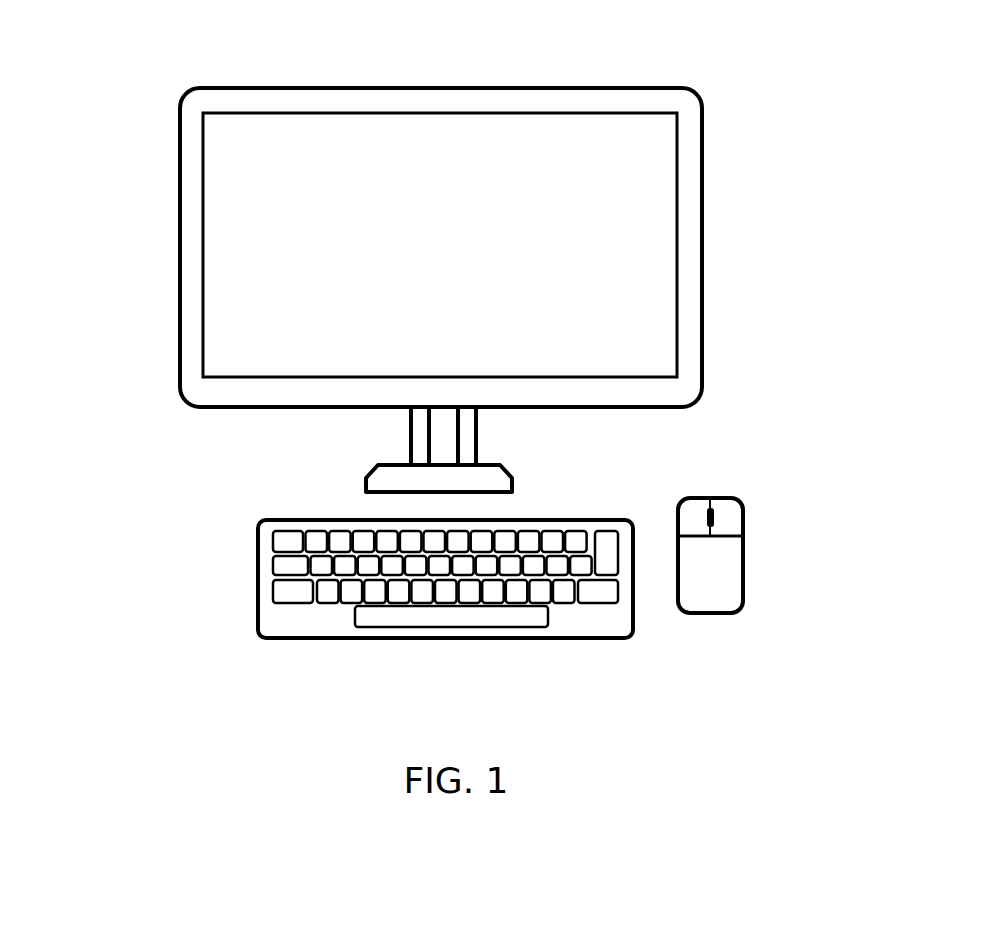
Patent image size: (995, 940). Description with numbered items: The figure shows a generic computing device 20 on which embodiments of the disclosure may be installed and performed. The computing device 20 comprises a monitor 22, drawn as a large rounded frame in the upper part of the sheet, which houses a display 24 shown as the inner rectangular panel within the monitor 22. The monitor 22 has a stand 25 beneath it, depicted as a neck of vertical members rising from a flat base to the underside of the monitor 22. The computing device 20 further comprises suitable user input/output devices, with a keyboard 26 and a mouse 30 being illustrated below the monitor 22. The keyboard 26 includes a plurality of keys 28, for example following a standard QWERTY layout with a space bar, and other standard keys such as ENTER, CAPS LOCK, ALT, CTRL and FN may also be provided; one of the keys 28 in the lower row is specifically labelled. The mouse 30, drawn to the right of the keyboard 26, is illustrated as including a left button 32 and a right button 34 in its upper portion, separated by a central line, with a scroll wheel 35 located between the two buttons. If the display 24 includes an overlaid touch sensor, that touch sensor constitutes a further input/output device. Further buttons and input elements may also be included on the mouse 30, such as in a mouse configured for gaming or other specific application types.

The computing device 20 is at (140, 111).
The monitor 22 is at (702, 215).
The display 24 is at (677, 270).
The stand 25 is at (405, 434).
The keyboard 26 is at (383, 572).
The keys 28 is at (283, 590).
The mouse 30 is at (723, 527).
The left button 32 is at (690, 514).
The right button 34 is at (725, 521).
The scroll wheel 35 is at (718, 517).